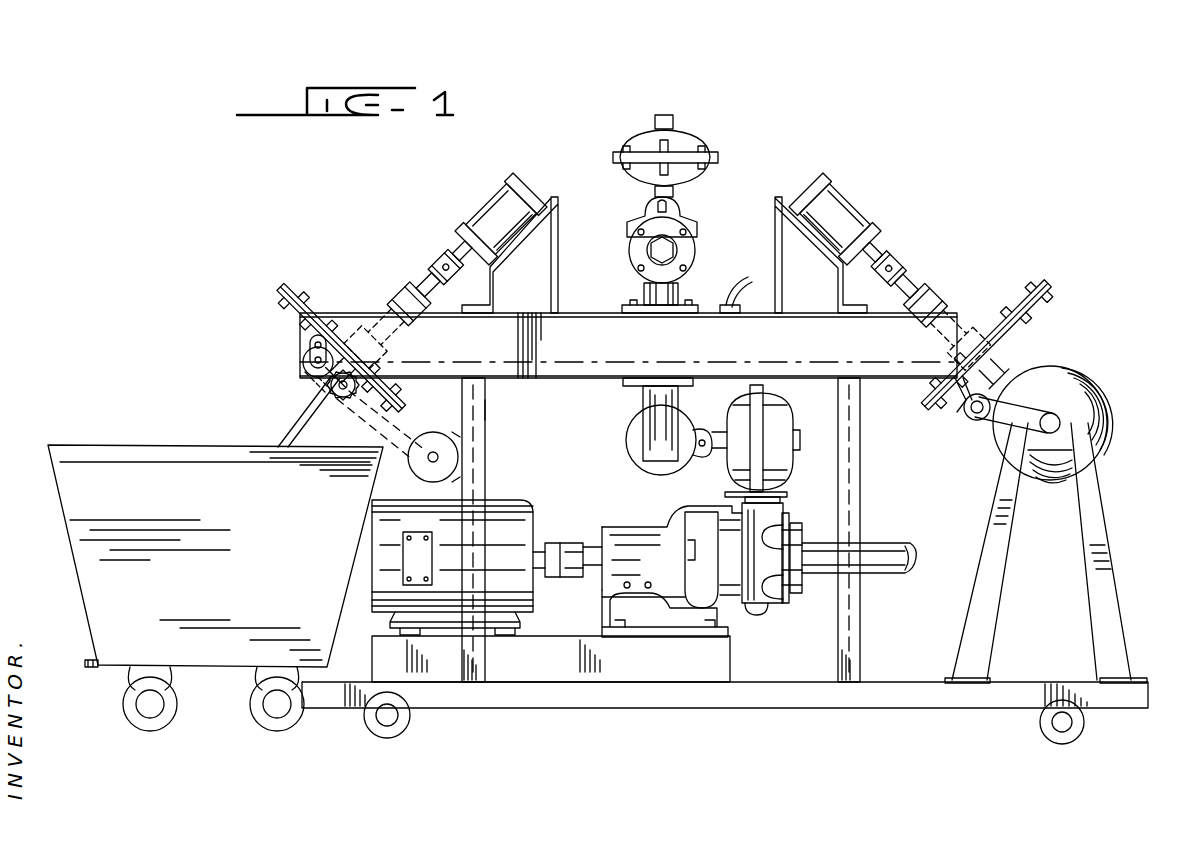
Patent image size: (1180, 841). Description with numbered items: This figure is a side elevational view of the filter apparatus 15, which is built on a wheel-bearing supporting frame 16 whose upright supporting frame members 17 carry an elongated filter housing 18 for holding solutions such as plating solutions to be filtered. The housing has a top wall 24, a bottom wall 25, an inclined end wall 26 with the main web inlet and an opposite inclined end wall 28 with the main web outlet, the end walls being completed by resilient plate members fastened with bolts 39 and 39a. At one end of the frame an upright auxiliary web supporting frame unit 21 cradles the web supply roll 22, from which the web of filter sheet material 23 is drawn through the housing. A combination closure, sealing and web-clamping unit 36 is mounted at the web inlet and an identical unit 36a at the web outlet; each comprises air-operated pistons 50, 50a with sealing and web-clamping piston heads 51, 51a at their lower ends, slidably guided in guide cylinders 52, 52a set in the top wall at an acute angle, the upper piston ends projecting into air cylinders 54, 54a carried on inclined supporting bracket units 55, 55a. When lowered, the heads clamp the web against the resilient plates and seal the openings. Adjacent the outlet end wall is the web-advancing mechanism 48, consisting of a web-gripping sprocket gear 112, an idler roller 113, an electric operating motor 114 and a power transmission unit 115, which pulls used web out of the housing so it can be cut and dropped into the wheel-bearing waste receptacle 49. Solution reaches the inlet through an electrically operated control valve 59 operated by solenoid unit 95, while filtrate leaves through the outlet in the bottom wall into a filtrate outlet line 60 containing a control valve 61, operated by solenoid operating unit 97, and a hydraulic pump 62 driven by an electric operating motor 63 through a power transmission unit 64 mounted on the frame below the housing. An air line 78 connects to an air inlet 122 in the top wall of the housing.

The filter apparatus 15 is at (951, 316).
The wheel-bearing supporting frame 16 is at (858, 710).
The upright supporting frame members 17 is at (485, 462).
The filter housing 18 is at (579, 314).
The auxiliary web supporting frame unit 21 is at (1116, 546).
The web supply roll 22 is at (1098, 426).
The web of filter sheet material 23 is at (293, 425).
The top wall 24 is at (1060, 415).
The bottom wall 25 is at (571, 400).
The inclined end wall 26 is at (951, 316).
The inclined end wall 28 is at (408, 236).
The combination closure, sealing and web-clamping unit 36 is at (942, 290).
The combination closure, sealing and web-clamping unit 36a is at (446, 255).
The bolts 39 is at (1035, 298).
The bolts 39a is at (300, 290).
The web-advancing mechanism 48 is at (345, 402).
The wheel-bearing waste receptacle 49 is at (130, 443).
The air-operated pistons 50 is at (898, 268).
The air-operated pistons 50a is at (430, 282).
The sealing and web-clamping piston head 51 is at (962, 330).
The sealing and web-clamping piston head 51a is at (350, 305).
The guide cylinder 52 is at (965, 315).
The guide cylinder 52a is at (395, 300).
The air cylinder 54 is at (838, 207).
The air cylinder 54a is at (486, 195).
The supporting bracket unit 55 is at (773, 248).
The supporting bracket unit 55a is at (568, 273).
The control valve 59 is at (668, 228).
The filtrate outlet line 60 is at (893, 577).
The control valve 61 is at (648, 470).
The hydraulic pump 62 is at (752, 610).
The electric operating motor 63 is at (525, 512).
The power transmission unit 64 is at (568, 578).
The air line 78 is at (742, 282).
The valve-operating solenoid unit 95 is at (692, 147).
The solenoid operating unit 97 is at (772, 418).
The sprocket gear 112 is at (322, 396).
The idler roller 113 is at (303, 370).
The electric operating motor 114 is at (420, 468).
The power transmission unit 115 is at (420, 420).
The air inlet 122 is at (731, 316).